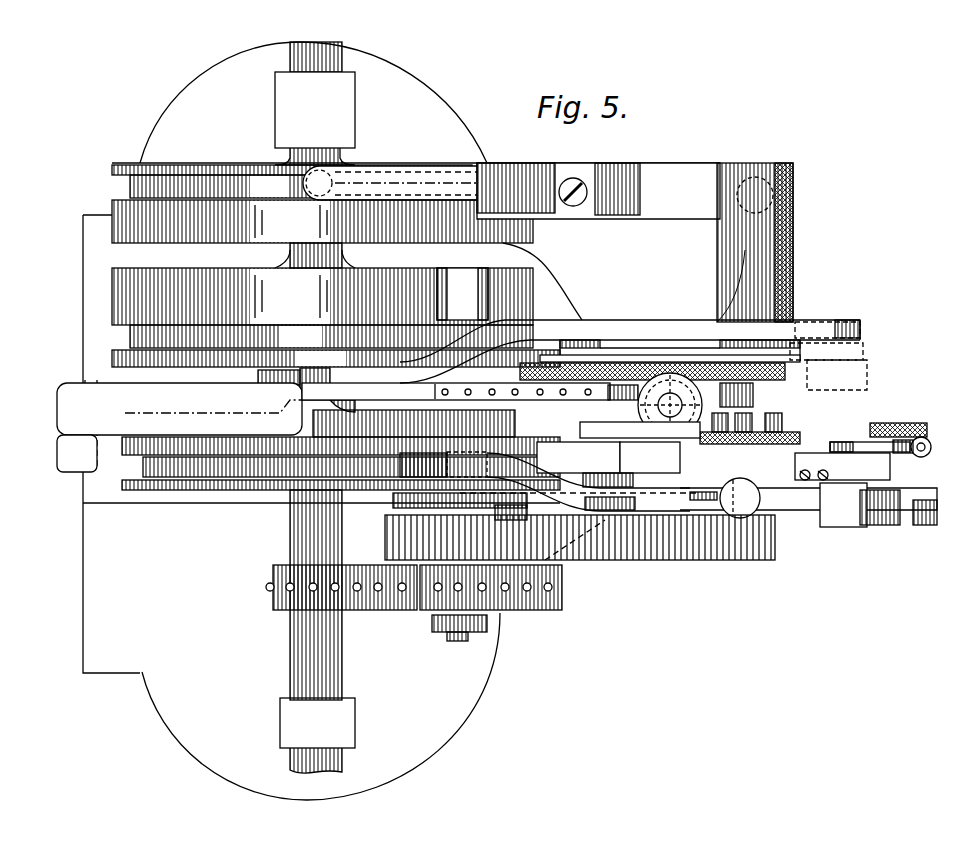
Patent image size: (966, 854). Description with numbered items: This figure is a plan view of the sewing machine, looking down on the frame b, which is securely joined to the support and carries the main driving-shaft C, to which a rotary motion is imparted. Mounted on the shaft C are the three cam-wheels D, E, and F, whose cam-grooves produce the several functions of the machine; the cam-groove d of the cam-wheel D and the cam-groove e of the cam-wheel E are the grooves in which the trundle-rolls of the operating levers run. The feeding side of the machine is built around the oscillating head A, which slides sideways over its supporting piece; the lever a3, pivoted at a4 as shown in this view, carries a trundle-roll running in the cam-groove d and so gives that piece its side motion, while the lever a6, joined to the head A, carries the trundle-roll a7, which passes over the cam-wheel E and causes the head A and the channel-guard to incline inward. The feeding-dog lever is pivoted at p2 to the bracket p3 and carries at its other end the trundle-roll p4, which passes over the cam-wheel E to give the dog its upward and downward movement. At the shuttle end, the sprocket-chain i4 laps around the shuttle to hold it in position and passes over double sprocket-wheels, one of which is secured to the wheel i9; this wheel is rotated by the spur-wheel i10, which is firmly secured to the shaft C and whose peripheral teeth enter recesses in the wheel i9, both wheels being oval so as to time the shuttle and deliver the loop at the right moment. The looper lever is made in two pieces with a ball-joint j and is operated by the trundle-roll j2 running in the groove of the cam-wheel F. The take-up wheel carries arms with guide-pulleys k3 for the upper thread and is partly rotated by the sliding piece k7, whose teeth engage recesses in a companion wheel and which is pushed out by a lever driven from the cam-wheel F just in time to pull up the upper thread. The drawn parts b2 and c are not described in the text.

The oscillating head A is at (789, 290).
The lever a3 is at (598, 191).
The pivot a4 is at (575, 207).
The lever a6 is at (590, 322).
The trundle-roll a7 is at (460, 288).
The frame b is at (320, 421).
The bearing block b2 is at (315, 410).
The upper shaft c is at (344, 54).
The main driving-shaft C is at (290, 661).
The cam-groove d is at (346, 183).
The cam-wheel D is at (322, 221).
The cam-wheel E is at (322, 296).
The cam-groove e is at (331, 337).
The cam-wheel F is at (312, 430).
The pivot p2 is at (636, 333).
The bracket p3 is at (658, 360).
The trundle-roll p4 is at (385, 357).
The guide-pulleys k3 is at (640, 405).
The sliding piece k7 is at (546, 396).
The ball-joint j is at (737, 516).
The trundle-roll j2 is at (850, 510).
The sprocket-chain i4 is at (668, 560).
The wheel i9 is at (548, 609).
The spur-wheel i10 is at (307, 602).